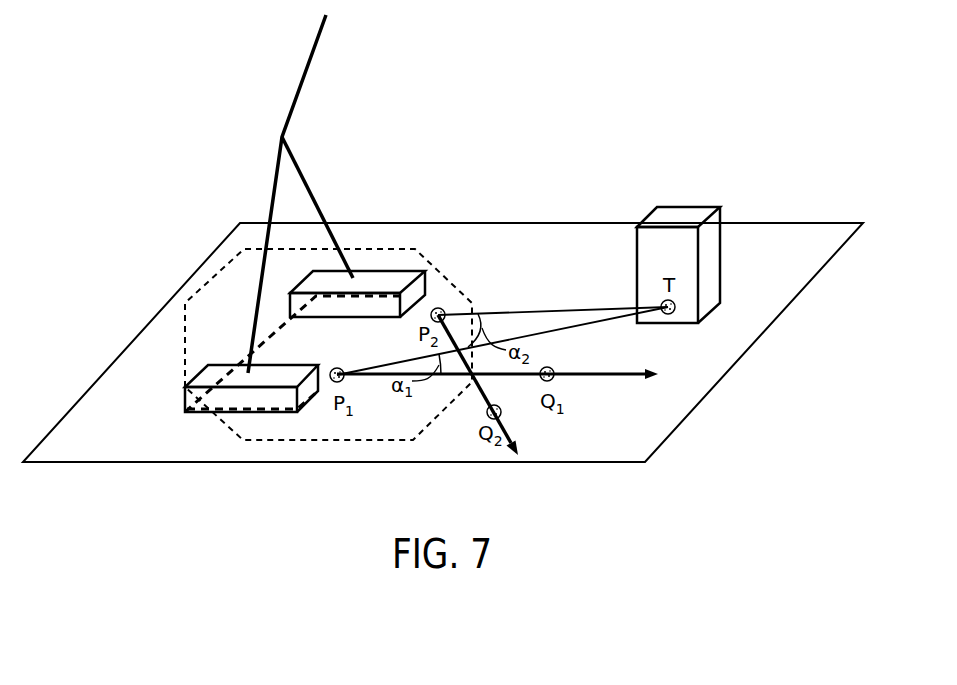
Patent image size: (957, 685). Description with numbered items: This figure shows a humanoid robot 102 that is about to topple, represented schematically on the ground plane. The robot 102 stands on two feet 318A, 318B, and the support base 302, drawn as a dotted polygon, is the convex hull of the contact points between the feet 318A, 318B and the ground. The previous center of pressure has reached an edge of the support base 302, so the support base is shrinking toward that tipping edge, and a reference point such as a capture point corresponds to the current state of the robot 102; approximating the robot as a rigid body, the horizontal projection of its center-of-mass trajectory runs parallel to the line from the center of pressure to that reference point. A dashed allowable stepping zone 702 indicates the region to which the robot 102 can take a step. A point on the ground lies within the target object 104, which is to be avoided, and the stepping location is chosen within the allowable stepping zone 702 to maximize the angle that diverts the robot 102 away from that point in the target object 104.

The humanoid robot 102 is at (297, 97).
The target object 104 is at (680, 218).
The support base 302 is at (265, 334).
The foot 318A is at (240, 403).
The foot 318B is at (371, 280).
The allowable stepping zone 702 is at (345, 442).